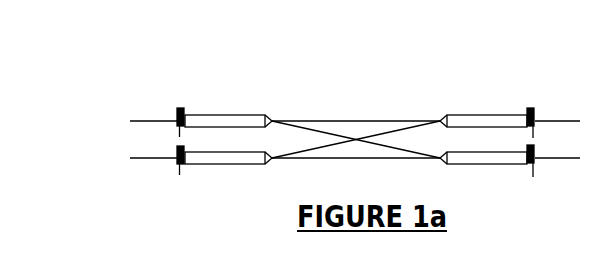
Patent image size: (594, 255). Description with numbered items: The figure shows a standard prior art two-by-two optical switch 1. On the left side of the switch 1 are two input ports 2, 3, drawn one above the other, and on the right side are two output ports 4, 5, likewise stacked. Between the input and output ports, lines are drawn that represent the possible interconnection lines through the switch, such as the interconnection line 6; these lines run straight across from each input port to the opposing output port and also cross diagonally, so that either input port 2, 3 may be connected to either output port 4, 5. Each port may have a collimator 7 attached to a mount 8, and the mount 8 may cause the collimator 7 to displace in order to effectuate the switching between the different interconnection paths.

The optical switch 1 is at (189, 92).
The input port 2 is at (168, 107).
The input port 3 is at (192, 167).
The output port 4 is at (510, 110).
The output port 5 is at (508, 165).
The interconnection line 6 is at (328, 131).
The collimator 7 is at (253, 165).
The mount 8 is at (177, 155).